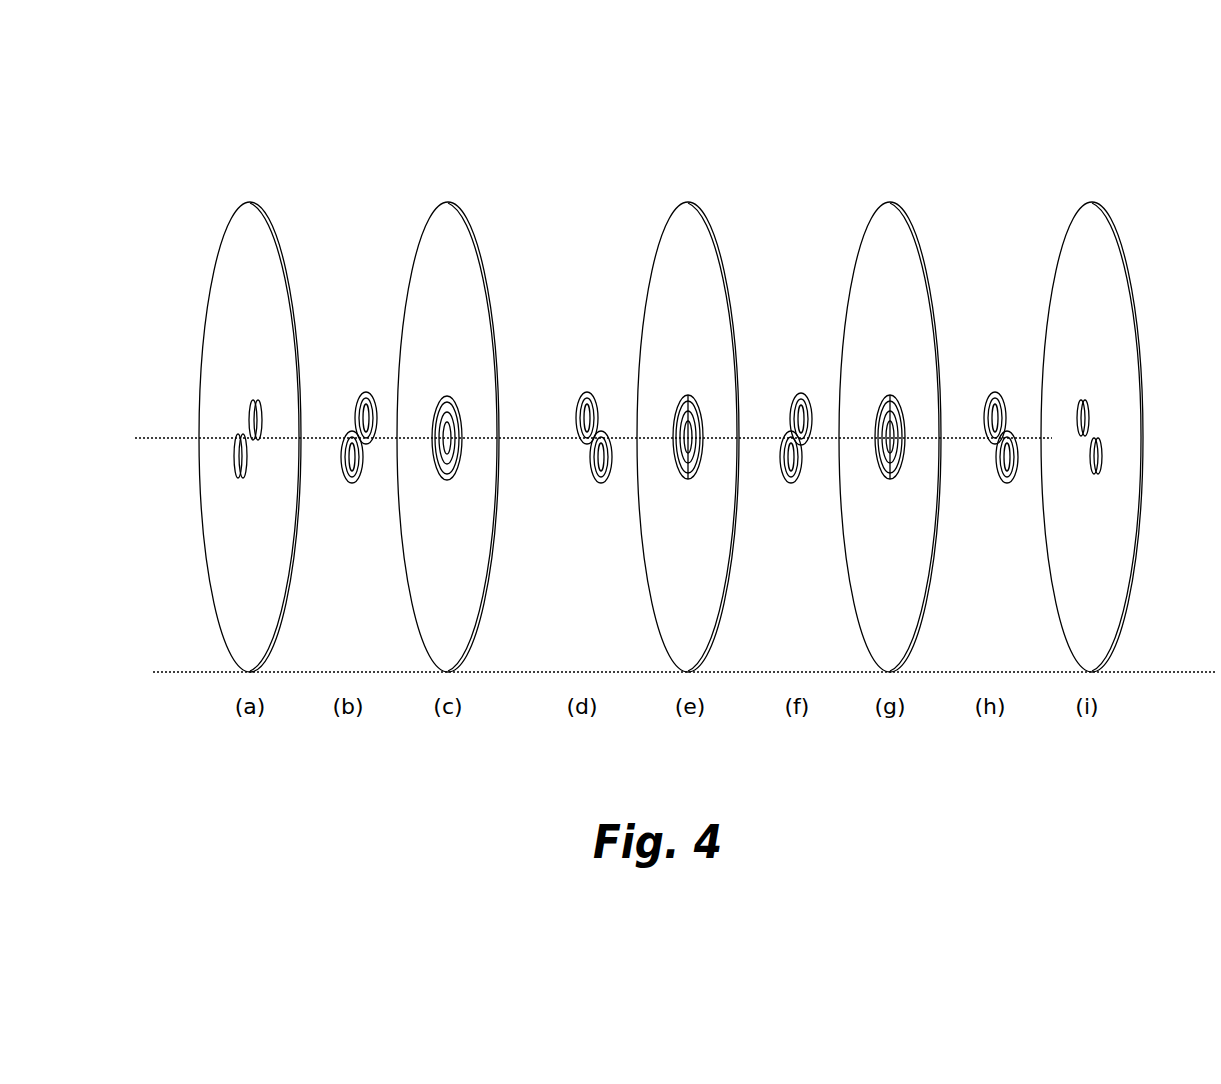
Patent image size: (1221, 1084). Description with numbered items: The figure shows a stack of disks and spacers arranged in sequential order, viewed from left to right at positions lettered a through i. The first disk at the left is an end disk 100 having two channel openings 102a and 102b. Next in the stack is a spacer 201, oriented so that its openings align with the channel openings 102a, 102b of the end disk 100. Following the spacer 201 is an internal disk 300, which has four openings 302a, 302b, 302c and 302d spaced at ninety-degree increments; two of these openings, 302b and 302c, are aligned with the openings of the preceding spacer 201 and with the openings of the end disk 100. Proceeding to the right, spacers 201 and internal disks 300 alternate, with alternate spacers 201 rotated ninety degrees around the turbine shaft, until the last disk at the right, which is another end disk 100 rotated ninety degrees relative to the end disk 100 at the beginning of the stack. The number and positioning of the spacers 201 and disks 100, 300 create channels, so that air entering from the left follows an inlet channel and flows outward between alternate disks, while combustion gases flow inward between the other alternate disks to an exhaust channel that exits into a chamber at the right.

The end disk 100 is at (245, 202).
The internal disk 300 is at (447, 202).
The spacer 201 is at (370, 394).
The channel opening 102a is at (250, 408).
The channel opening 102b is at (232, 462).
The opening 302a is at (438, 416).
The opening 302b is at (455, 416).
The opening 302c is at (438, 460).
The opening 302d is at (455, 460).